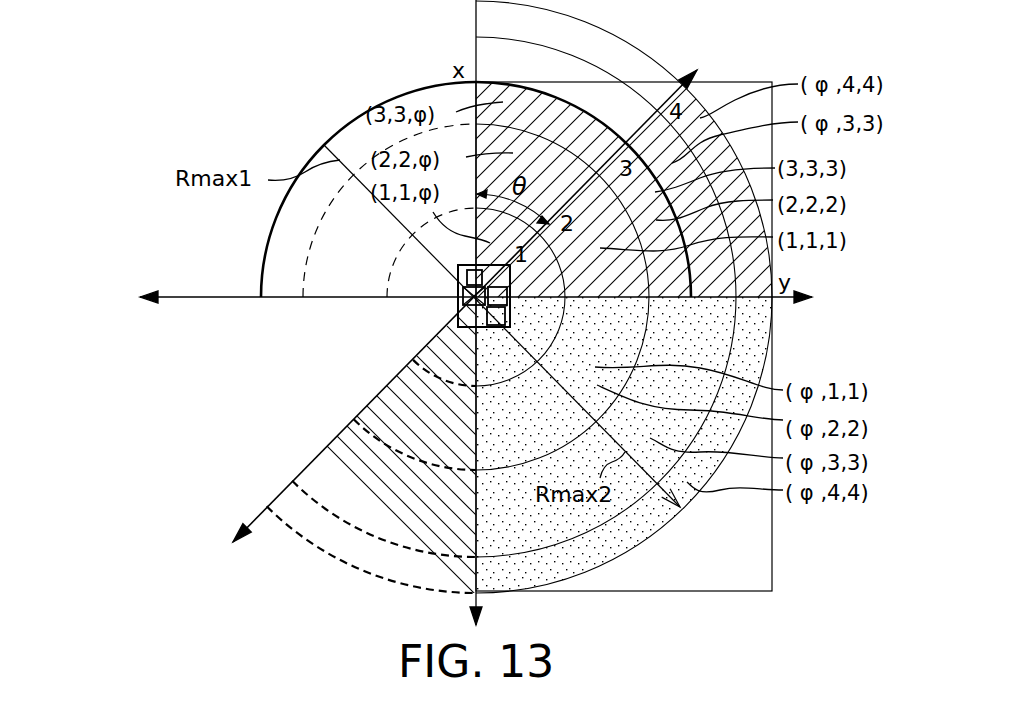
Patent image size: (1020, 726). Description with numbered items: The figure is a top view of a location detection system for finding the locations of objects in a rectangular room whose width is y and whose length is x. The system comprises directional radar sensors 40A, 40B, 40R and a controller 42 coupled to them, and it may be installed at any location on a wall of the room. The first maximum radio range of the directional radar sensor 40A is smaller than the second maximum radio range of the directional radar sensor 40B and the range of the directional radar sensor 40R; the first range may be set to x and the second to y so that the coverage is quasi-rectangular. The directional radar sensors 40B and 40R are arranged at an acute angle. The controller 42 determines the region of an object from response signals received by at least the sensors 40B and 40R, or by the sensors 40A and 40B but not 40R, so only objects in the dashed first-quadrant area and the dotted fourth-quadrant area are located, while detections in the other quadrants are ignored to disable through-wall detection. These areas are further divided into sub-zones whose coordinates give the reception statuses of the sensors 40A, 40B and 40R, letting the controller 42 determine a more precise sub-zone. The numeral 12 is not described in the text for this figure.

The sensor module 12 is at (458, 306).
The directional radar sensor 40A is at (465, 277).
The directional radar sensor 40B is at (508, 302).
The directional radar sensor 40R is at (497, 330).
The controller 42 is at (462, 292).